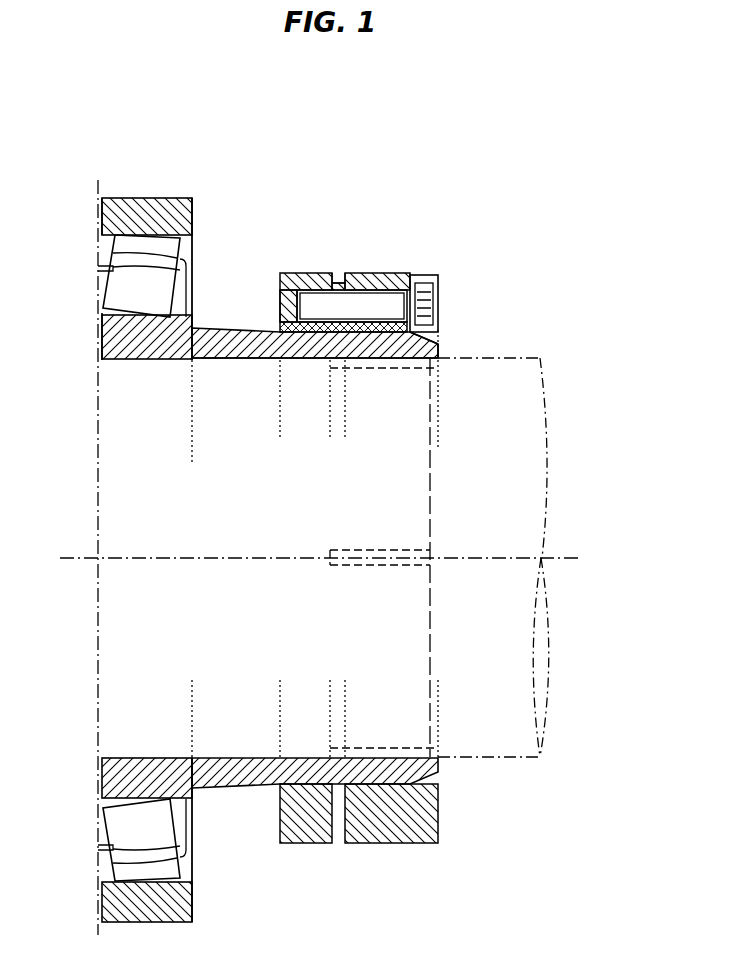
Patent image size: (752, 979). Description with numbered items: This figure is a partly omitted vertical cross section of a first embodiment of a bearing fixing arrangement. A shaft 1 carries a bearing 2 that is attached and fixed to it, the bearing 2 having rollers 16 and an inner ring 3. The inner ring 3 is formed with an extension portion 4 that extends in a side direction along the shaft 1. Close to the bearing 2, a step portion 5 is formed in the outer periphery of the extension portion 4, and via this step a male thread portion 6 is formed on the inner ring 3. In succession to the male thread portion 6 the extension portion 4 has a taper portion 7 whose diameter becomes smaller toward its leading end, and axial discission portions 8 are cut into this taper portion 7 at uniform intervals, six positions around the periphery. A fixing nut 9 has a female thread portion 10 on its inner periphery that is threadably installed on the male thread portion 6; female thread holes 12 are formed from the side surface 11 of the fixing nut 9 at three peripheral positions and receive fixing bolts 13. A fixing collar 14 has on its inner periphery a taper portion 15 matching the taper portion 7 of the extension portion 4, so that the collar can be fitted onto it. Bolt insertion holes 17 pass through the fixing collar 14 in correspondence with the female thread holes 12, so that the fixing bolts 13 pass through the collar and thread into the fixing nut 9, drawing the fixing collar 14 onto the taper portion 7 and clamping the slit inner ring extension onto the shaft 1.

The shaft 1 is at (526, 440).
The bearing 2 is at (136, 195).
The inner ring 3 is at (123, 345).
The extension portion 4 is at (228, 328).
The step portion 5 is at (280, 815).
The male thread portion 6 is at (228, 360).
The taper portion 7 is at (442, 334).
The discission portions 8 is at (428, 562).
The fixing nut 9 is at (303, 273).
The female thread portion 10 is at (239, 442).
The side surface 11 is at (338, 283).
The female thread holes 12 is at (280, 295).
The fixing bolts 13 is at (392, 305).
The fixing collar 14 is at (378, 273).
The taper portion 15 is at (438, 346).
The rollers 16 is at (123, 828).
The bolt insertion holes 17 is at (407, 275).